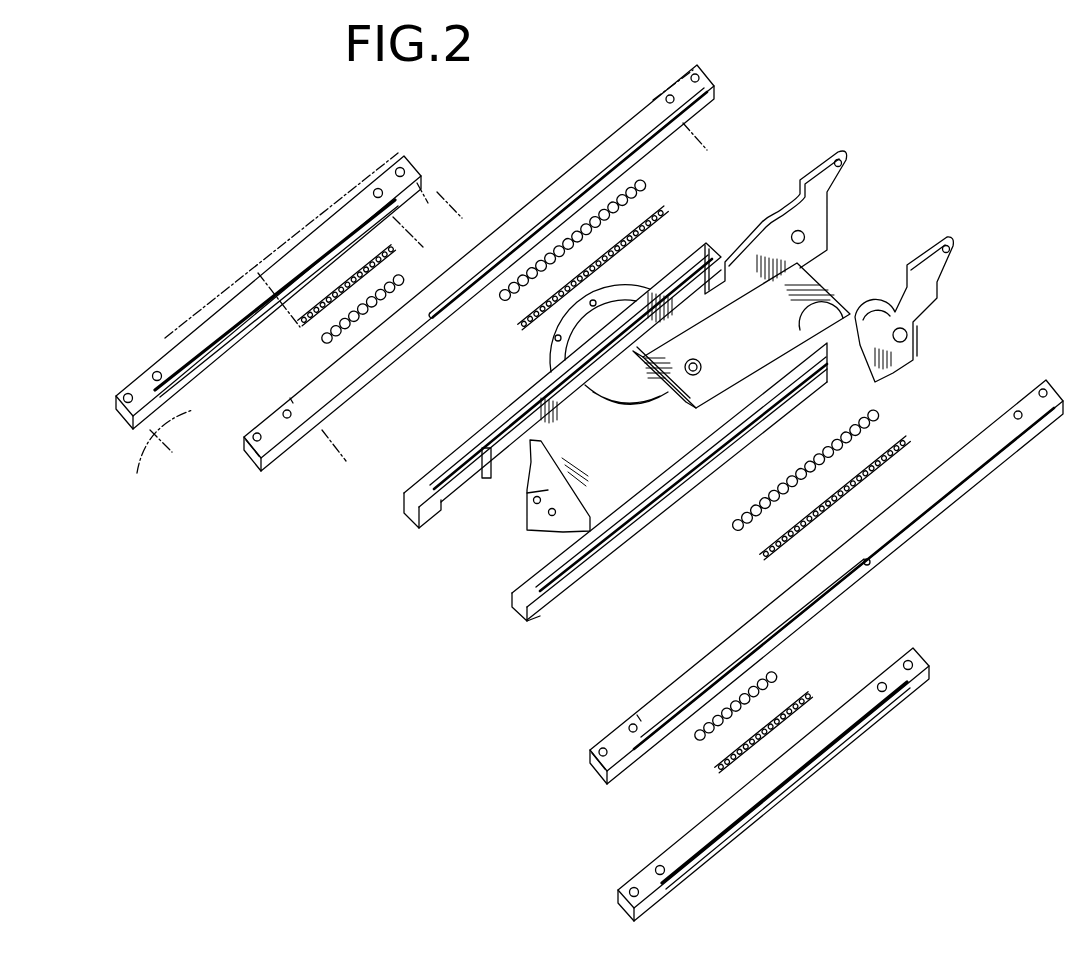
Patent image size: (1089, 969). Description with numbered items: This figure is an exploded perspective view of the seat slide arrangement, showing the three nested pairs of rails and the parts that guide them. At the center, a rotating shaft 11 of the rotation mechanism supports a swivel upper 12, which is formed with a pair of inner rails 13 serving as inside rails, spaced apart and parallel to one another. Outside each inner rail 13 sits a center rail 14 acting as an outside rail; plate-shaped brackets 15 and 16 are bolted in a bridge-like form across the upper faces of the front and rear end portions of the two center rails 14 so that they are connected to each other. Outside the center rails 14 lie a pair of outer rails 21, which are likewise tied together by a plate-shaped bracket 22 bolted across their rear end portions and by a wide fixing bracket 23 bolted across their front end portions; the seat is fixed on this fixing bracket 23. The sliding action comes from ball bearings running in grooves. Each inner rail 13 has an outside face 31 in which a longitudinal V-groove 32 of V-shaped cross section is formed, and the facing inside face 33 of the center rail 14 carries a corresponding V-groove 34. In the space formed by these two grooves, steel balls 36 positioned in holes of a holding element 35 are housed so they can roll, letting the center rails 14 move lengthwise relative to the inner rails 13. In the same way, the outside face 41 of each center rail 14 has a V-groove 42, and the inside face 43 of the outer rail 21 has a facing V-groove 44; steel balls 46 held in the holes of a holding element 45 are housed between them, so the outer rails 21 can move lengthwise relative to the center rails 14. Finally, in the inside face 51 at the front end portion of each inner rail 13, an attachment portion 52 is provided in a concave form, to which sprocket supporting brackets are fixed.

The rotating shaft 11 is at (695, 287).
The swivel upper 12 is at (922, 330).
The inner rail 13 is at (577, 475).
The center rail 14 is at (617, 462).
The plate-shaped bracket 15 is at (313, 463).
The plate-shaped bracket 16 is at (722, 92).
The outer rail 21 is at (479, 541).
The plate-shaped bracket 22 is at (432, 198).
The fixing bracket 23 is at (197, 391).
The outside face 31 is at (420, 481).
The V-groove 32 is at (541, 617).
The inside face 33 is at (292, 443).
The V-groove 34 is at (447, 320).
The holding element 35 is at (663, 207).
The steel balls 36 is at (628, 193).
The outside face 41 is at (243, 433).
The V-groove 42 is at (638, 750).
The inside face 43 is at (113, 411).
The V-groove 44 is at (177, 357).
The holding element 45 is at (377, 267).
The steel balls 46 is at (333, 320).
The inside face 51 is at (465, 557).
The attachment portion 52 is at (481, 455).